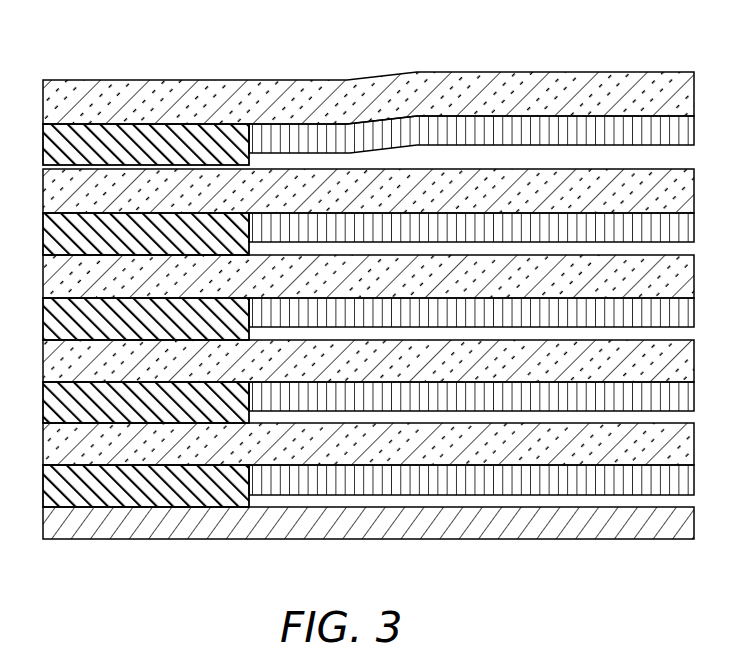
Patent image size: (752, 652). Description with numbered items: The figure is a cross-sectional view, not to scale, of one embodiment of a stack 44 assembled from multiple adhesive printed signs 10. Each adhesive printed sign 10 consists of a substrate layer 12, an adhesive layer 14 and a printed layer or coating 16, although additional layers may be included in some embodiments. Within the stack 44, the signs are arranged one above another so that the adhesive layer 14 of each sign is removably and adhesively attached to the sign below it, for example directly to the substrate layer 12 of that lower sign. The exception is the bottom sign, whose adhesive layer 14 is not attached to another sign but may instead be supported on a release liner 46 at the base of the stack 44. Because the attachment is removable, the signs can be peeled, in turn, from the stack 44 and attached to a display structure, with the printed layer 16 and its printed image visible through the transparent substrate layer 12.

The adhesive printed sign 10 is at (702, 72).
The substrate layer 12 is at (128, 93).
The adhesive layer 14 is at (43, 145).
The printed layer 16 is at (572, 127).
The stack 44 is at (381, 62).
The release liner 46 is at (120, 525).